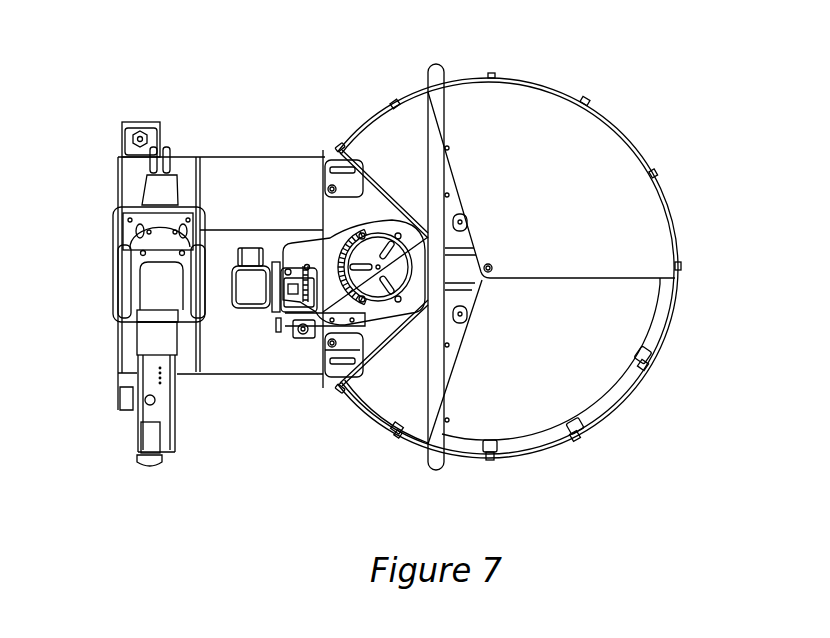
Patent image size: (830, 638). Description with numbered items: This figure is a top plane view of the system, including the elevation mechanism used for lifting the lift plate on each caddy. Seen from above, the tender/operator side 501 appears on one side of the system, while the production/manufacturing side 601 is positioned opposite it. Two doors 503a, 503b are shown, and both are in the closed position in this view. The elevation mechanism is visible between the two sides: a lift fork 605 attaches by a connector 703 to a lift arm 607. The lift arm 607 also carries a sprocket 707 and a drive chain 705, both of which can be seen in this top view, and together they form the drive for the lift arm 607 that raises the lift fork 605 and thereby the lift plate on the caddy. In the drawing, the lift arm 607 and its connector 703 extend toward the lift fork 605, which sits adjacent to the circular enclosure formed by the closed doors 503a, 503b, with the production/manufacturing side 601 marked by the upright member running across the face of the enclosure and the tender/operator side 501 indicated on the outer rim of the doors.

The tender/operator side 501 is at (631, 119).
The door 503a is at (647, 193).
The door 503b is at (625, 340).
The production/manufacturing side 601 is at (371, 92).
The lift fork 605 is at (330, 258).
The lift arm 607 is at (271, 312).
The connector 703 is at (290, 268).
The drive chain 705 is at (323, 312).
The sprocket 707 is at (298, 330).